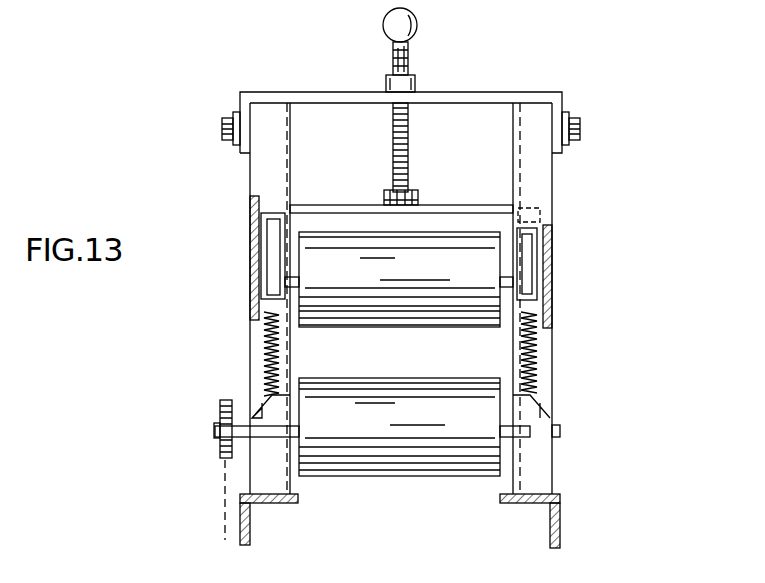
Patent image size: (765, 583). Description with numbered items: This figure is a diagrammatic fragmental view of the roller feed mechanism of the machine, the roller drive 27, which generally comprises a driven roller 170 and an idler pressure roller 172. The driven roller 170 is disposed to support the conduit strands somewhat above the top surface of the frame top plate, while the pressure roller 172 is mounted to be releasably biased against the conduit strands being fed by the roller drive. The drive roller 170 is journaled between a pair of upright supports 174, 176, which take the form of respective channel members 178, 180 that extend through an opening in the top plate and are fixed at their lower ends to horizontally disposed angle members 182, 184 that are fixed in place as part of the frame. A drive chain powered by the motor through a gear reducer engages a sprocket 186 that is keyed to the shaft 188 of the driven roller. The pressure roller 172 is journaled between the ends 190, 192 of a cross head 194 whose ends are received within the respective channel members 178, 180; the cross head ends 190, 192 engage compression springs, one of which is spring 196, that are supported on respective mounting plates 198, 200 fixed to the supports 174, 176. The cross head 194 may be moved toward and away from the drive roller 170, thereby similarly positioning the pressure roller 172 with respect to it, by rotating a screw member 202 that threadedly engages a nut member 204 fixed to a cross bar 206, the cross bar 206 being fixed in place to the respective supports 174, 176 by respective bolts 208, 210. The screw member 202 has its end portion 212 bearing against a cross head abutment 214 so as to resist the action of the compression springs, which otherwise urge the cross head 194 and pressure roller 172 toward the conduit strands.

The roller drive 27 is at (588, 232).
The driven roller 170 is at (412, 465).
The idler pressure roller 172 is at (447, 240).
The upright support 174 is at (548, 342).
The upright support 176 is at (262, 348).
The channel member 178 is at (552, 282).
The channel member 180 is at (250, 277).
The angle member 182 is at (562, 521).
The angle member 184 is at (242, 536).
The sprocket 186 is at (222, 455).
The shaft 188 is at (215, 432).
The cross head end 190 is at (537, 245).
The cross head end 192 is at (249, 238).
The cross head 194 is at (347, 210).
The compression spring 196 is at (256, 378).
The mounting plate 198 is at (548, 428).
The mounting plate 200 is at (252, 392).
The screw member 202 is at (410, 125).
The nut member 204 is at (415, 75).
The cross bar 206 is at (505, 93).
The bolt 208 is at (582, 128).
The bolt 210 is at (225, 126).
The end portion 212 is at (406, 196).
The cross head abutment 214 is at (392, 197).